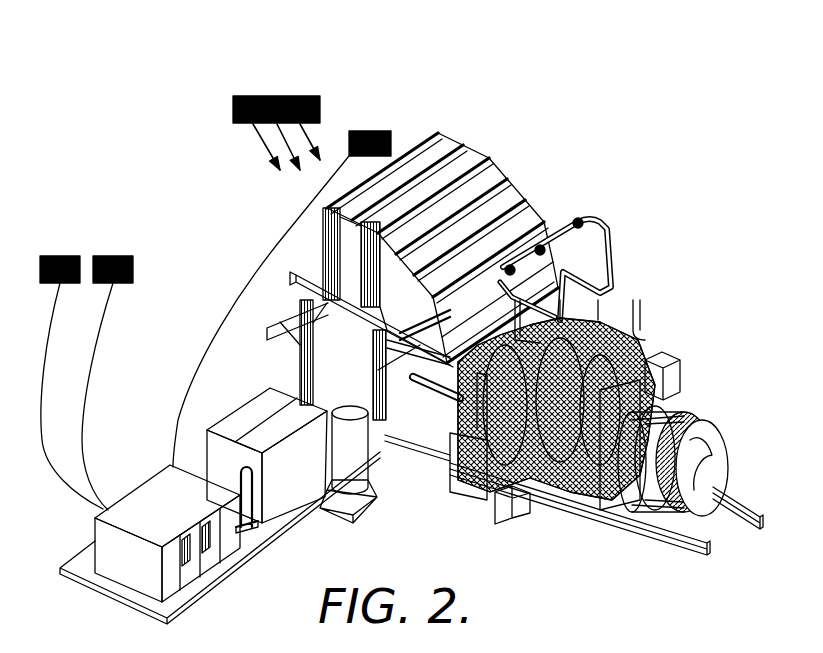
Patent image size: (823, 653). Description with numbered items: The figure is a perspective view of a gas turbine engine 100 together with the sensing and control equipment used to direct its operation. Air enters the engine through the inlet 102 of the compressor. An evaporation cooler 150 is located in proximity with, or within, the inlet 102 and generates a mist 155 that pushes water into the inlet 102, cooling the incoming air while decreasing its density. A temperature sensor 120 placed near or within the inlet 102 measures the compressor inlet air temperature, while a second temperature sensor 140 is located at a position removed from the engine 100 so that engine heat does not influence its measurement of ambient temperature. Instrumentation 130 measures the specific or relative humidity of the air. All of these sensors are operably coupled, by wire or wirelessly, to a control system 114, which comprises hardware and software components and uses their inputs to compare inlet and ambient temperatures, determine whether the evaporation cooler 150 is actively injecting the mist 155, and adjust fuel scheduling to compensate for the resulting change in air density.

The gas turbine engine 100 is at (700, 291).
The inlet 102 is at (357, 203).
The control system 114 is at (148, 487).
The temperature sensor 120 is at (397, 116).
The instrumentation 130 is at (92, 242).
The temperature sensor 140 is at (146, 242).
The evaporation cooler 150 is at (283, 82).
The mist 155 is at (270, 153).